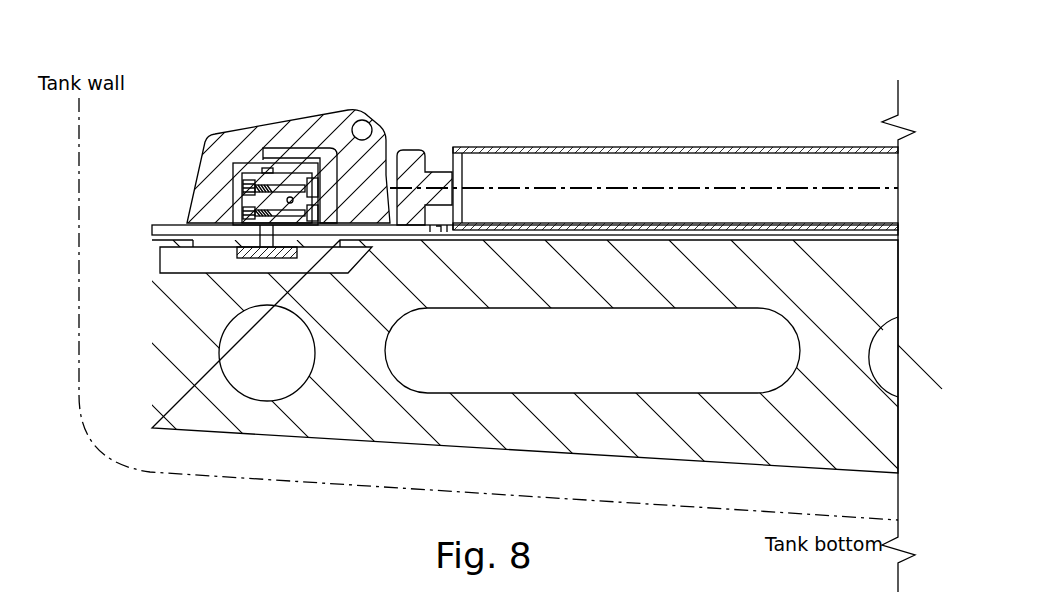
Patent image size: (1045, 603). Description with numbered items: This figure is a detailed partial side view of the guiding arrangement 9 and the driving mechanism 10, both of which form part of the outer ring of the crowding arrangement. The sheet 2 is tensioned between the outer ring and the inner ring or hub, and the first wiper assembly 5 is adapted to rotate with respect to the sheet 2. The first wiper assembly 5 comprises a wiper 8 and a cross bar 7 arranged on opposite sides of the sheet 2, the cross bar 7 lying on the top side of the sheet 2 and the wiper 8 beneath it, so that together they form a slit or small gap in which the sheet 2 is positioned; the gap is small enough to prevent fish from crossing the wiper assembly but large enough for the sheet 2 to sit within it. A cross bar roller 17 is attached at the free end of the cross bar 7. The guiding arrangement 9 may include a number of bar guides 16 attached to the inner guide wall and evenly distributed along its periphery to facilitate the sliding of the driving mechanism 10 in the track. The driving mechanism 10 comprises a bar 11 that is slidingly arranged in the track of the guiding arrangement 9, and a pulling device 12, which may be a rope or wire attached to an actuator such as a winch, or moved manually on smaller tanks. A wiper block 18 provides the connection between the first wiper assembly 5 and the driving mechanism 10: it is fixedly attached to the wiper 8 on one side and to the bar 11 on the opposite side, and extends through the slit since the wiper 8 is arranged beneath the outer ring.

The sheet 2 is at (874, 240).
The first wiper assembly 5 is at (750, 70).
The cross bar 7 is at (666, 146).
The wiper 8 is at (338, 427).
The guiding arrangement 9 is at (256, 76).
The driving mechanism 10 is at (253, 152).
The bar 11 is at (243, 203).
The pulling device 12 is at (280, 195).
The bar guides 16 is at (328, 160).
The cross bar roller 17 is at (408, 152).
The wiper block 18 is at (233, 253).